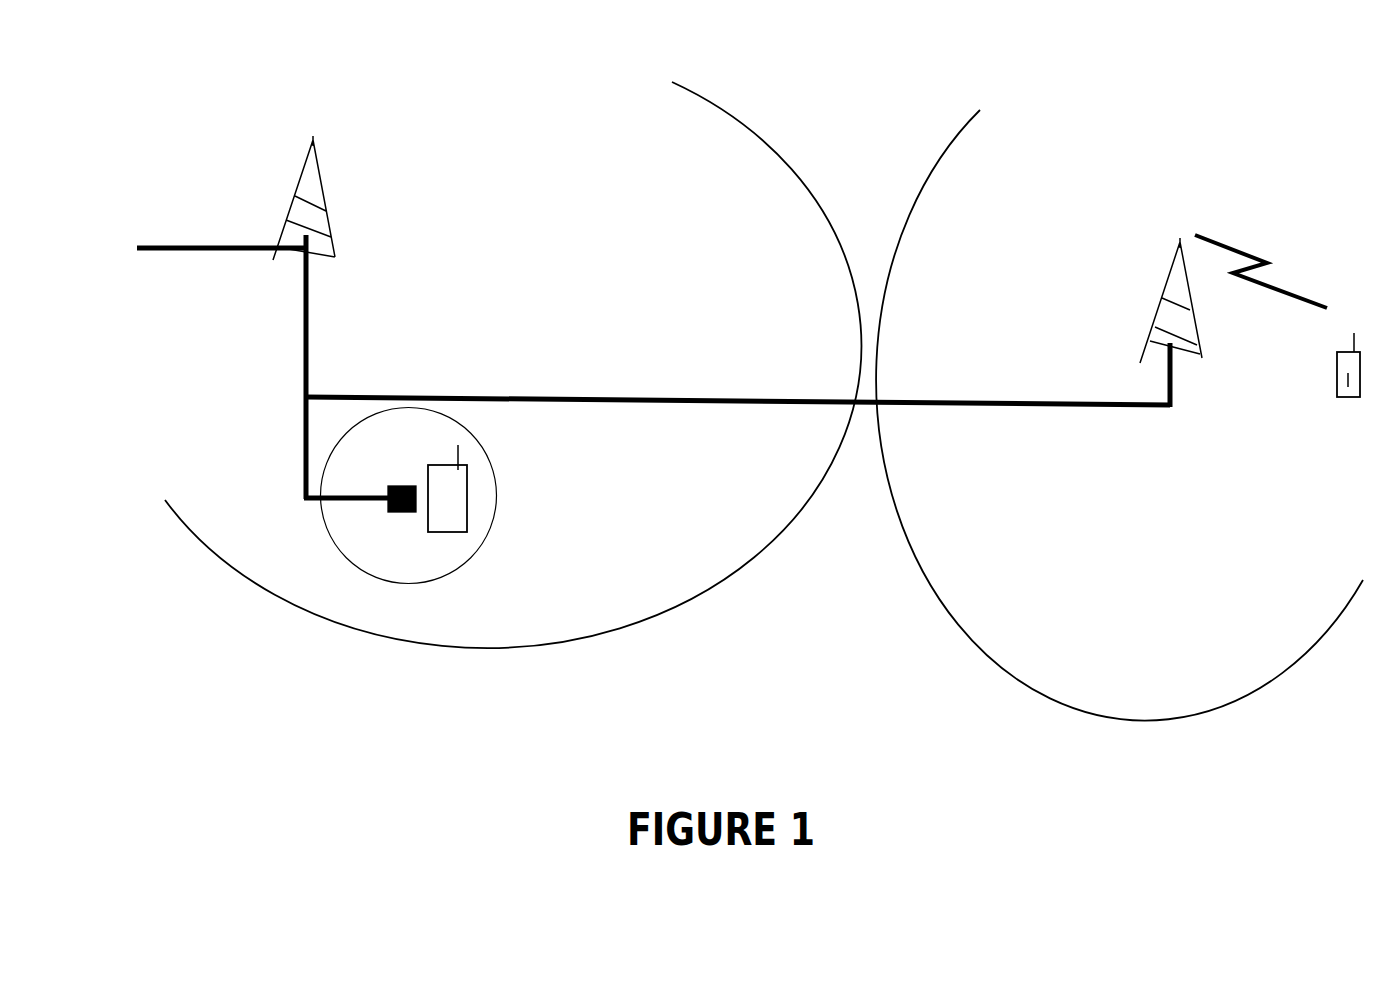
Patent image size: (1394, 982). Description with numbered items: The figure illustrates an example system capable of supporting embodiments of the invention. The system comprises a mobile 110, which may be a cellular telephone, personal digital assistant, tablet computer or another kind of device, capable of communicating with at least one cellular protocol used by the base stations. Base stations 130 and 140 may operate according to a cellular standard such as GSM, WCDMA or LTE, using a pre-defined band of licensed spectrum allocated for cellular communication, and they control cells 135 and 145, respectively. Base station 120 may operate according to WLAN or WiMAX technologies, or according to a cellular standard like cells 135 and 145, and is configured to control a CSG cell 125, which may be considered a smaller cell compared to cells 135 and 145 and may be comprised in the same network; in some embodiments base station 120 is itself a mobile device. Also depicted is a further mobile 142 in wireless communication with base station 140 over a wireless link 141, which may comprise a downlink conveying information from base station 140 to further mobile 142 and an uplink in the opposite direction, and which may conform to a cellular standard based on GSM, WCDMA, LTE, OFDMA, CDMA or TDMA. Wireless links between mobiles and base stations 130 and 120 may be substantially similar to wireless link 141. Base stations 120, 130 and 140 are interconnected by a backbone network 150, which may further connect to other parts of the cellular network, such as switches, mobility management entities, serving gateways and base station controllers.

The mobile 110 is at (447, 492).
The base station 120 is at (397, 486).
The CSG cell 125 is at (408, 583).
The base station 130 is at (269, 317).
The cell 135 is at (723, 583).
The base station 140 is at (1149, 322).
The wireless link 141 is at (1261, 271).
The further mobile 142 is at (1350, 397).
The cell 145 is at (1005, 662).
The backbone network 150 is at (738, 382).